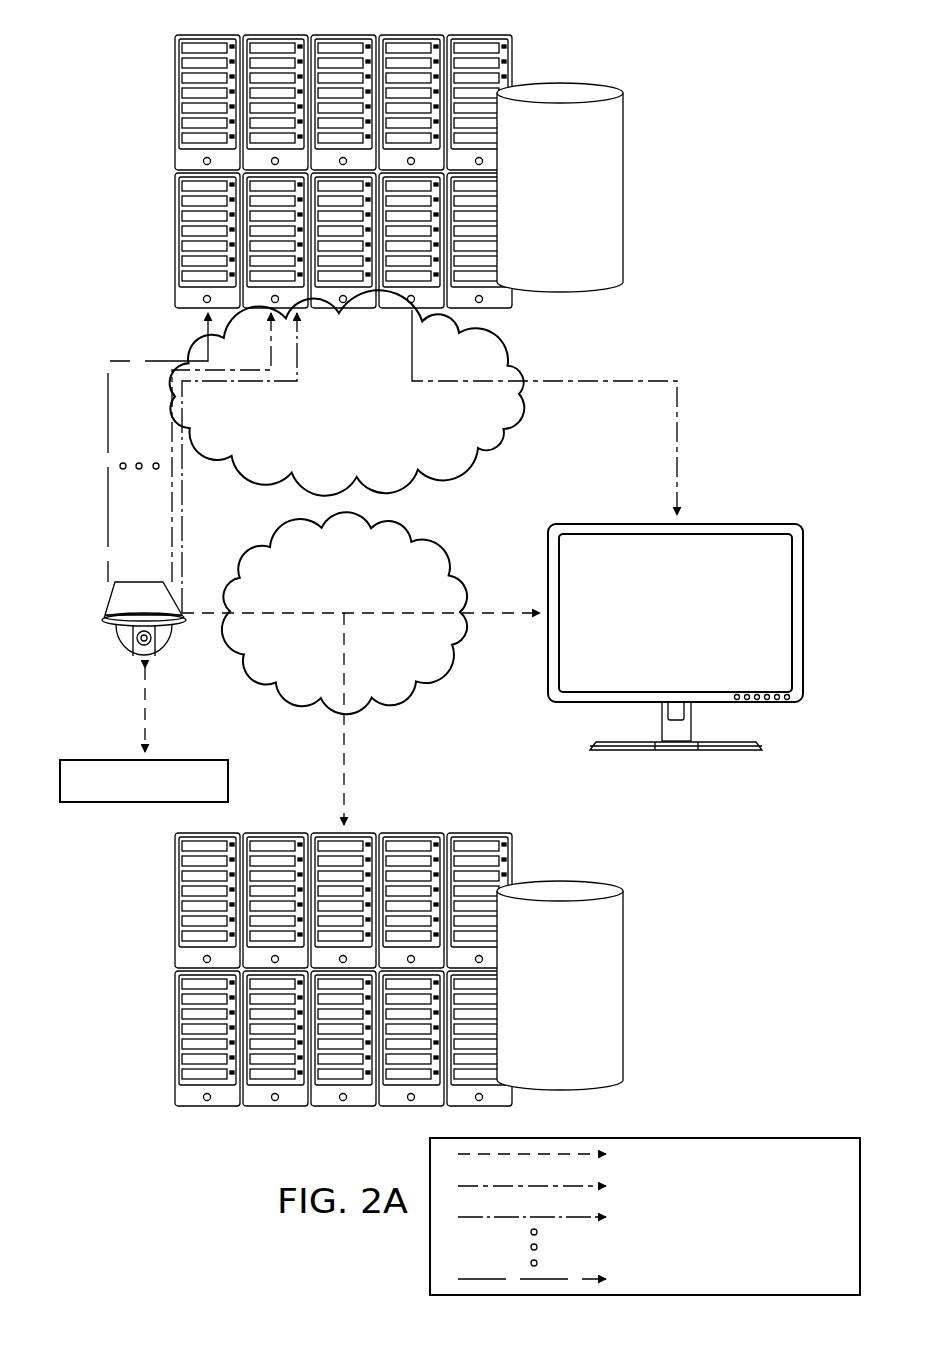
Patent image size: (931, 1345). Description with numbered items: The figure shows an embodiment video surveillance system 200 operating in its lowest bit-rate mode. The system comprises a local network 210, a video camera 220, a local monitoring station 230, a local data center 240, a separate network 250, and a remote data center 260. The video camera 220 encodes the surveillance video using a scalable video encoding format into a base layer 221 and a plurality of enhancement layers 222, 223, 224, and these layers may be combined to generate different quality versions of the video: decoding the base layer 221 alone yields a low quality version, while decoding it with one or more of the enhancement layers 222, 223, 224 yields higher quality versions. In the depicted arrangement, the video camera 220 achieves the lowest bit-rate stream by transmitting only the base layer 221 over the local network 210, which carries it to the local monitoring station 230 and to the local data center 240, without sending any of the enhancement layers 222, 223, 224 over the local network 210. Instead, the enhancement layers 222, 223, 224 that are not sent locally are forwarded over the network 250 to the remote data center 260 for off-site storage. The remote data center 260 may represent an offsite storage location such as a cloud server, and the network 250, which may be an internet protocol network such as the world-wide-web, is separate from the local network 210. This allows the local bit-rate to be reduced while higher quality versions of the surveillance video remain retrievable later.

The video surveillance system 200 is at (668, 50).
The local network 210 is at (324, 526).
The video camera 220 is at (163, 652).
The base layer 221 is at (481, 610).
The enhancement layer 222 is at (182, 505).
The enhancement layer 223 is at (172, 462).
The enhancement layer 224 is at (122, 358).
The local monitoring station 230 is at (712, 523).
The local data center 240 is at (166, 1081).
The network 250 is at (374, 464).
The remote data center 260 is at (170, 56).